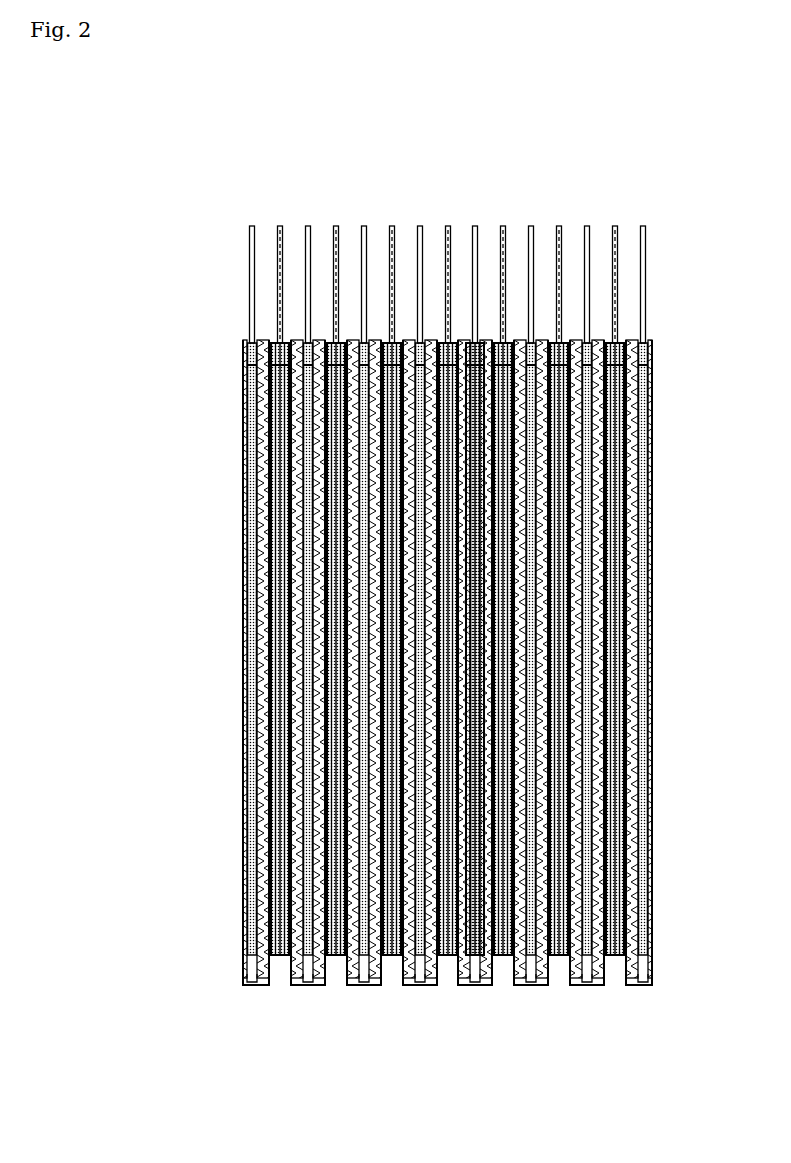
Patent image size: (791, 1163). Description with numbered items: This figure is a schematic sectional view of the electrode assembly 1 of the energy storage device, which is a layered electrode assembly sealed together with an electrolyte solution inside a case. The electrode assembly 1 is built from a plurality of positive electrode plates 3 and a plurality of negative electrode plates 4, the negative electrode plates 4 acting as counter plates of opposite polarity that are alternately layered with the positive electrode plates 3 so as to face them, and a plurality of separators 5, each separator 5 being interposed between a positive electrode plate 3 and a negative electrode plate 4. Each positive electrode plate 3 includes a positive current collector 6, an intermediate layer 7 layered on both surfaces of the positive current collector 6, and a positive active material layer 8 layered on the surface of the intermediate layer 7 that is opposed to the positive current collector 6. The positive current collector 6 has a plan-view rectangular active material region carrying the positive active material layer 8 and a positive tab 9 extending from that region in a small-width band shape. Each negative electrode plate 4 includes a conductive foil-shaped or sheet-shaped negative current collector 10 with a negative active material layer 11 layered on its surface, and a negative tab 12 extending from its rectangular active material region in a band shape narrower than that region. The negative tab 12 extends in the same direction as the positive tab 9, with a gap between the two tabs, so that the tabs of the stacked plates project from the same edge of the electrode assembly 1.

The electrode assembly 1 is at (449, 196).
The positive electrode plate 3 is at (283, 968).
The negative electrode plate 4 is at (252, 993).
The separator 5 is at (267, 987).
The positive current collector 6 is at (615, 957).
The intermediate layer 7 is at (610, 957).
The positive active material layer 8 is at (606, 957).
The positive tab 9 is at (280, 226).
The negative current collector 10 is at (476, 957).
The negative active material layer 11 is at (471, 957).
The negative tab 12 is at (252, 226).